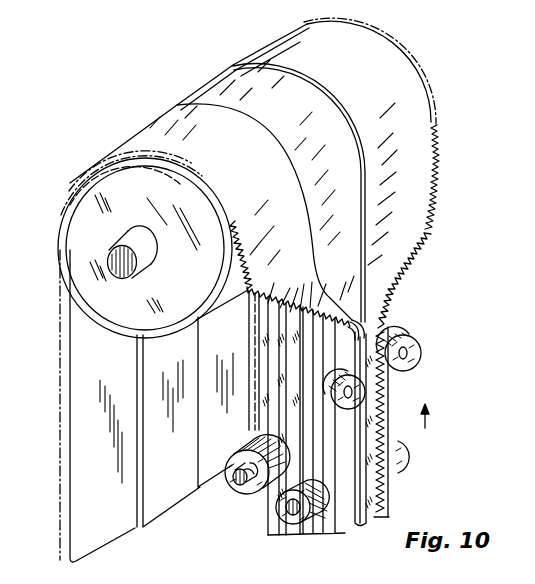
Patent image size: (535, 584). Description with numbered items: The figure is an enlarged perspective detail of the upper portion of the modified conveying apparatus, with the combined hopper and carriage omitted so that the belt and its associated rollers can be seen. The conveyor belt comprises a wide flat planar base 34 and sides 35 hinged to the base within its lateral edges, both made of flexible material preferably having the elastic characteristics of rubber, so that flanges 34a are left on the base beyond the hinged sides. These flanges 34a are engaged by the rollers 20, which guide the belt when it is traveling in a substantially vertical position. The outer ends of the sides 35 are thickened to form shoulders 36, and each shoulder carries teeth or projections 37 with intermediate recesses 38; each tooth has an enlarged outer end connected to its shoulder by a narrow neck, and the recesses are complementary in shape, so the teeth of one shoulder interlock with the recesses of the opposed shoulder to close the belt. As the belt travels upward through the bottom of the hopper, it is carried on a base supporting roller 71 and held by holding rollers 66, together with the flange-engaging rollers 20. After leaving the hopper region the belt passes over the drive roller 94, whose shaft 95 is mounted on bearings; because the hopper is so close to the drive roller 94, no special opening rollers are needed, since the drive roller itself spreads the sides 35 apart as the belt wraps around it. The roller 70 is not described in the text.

The rollers 20 is at (408, 453).
The base 34 is at (328, 144).
The flanges 34a is at (279, 419).
The sides 35 is at (276, 170).
The shoulders 36 is at (390, 497).
The teeth or projections 37 is at (338, 312).
The recesses 38 is at (297, 305).
The holding rollers 66 is at (412, 337).
The roll 70 is at (236, 471).
The base supporting roller 71 is at (248, 485).
The drive roller 94 is at (107, 292).
The shaft 95 is at (110, 255).